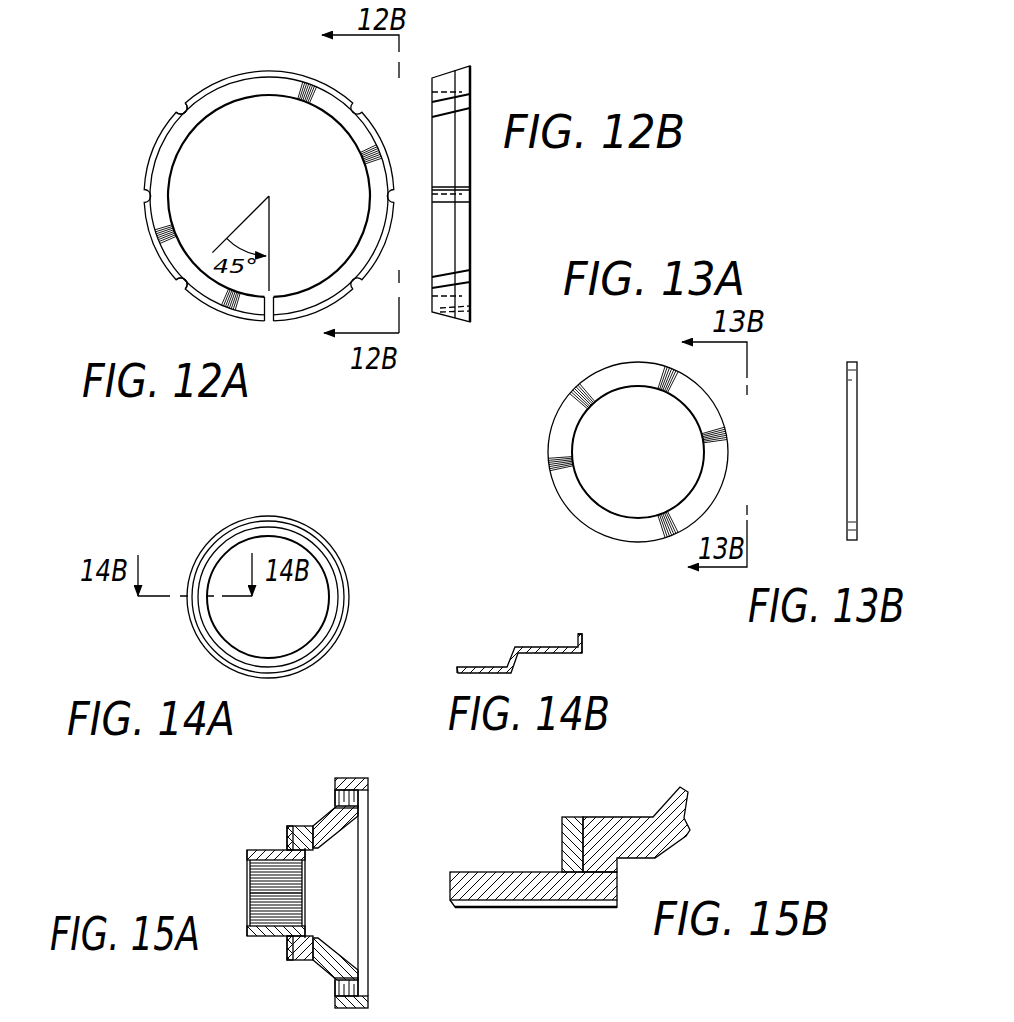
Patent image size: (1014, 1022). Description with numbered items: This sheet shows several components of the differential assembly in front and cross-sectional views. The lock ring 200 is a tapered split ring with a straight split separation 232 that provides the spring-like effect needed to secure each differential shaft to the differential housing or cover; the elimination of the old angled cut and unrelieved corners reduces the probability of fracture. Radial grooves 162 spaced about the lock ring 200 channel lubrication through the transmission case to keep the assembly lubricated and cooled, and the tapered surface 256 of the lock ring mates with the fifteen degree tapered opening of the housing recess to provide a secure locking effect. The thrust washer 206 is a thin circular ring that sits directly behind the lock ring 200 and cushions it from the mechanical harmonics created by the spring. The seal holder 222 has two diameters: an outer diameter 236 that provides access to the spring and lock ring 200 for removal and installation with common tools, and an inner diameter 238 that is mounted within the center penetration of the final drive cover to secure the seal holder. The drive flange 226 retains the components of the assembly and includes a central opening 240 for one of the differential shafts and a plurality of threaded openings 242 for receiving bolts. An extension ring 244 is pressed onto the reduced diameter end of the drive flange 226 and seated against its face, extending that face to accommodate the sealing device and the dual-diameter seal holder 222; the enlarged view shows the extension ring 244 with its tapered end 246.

In FIG. 12A, the lock ring 200 is at (212, 72).
In FIG. 12B, the lock ring 200 is at (480, 62).
In FIG. 12A, the radial grooves 162 is at (181, 109).
In FIG. 12B, the radial grooves 162 is at (462, 107).
In FIG. 12A, the tapered surface 256 is at (165, 158).
In FIG. 12B, the tapered surface 256 is at (442, 132).
In FIG. 12A, the straight split separation 232 is at (267, 318).
In FIG. 13A, the thrust washer 206 is at (546, 455).
In FIG. 13B, the thrust washer 206 is at (836, 453).
In FIG. 14A, the seal holder 222 is at (334, 533).
In FIG. 14B, the seal holder 222 is at (506, 626).
In FIG. 14A, the inner diameter 238 is at (222, 552).
In FIG. 14B, the inner diameter 238 is at (478, 665).
In FIG. 14A, the outer diameter 236 is at (340, 585).
In FIG. 14B, the outer diameter 236 is at (555, 645).
In FIG. 15A, the drive flange 226 is at (296, 798).
In FIG. 15B, the drive flange 226 is at (620, 815).
In FIG. 15A, the threaded openings 242 is at (352, 797).
In FIG. 15A, the extension ring 244 is at (285, 840).
In FIG. 15B, the extension ring 244 is at (562, 840).
In FIG. 15A, the central opening 240 is at (272, 896).
In FIG. 15B, the tapered end 246 is at (617, 873).